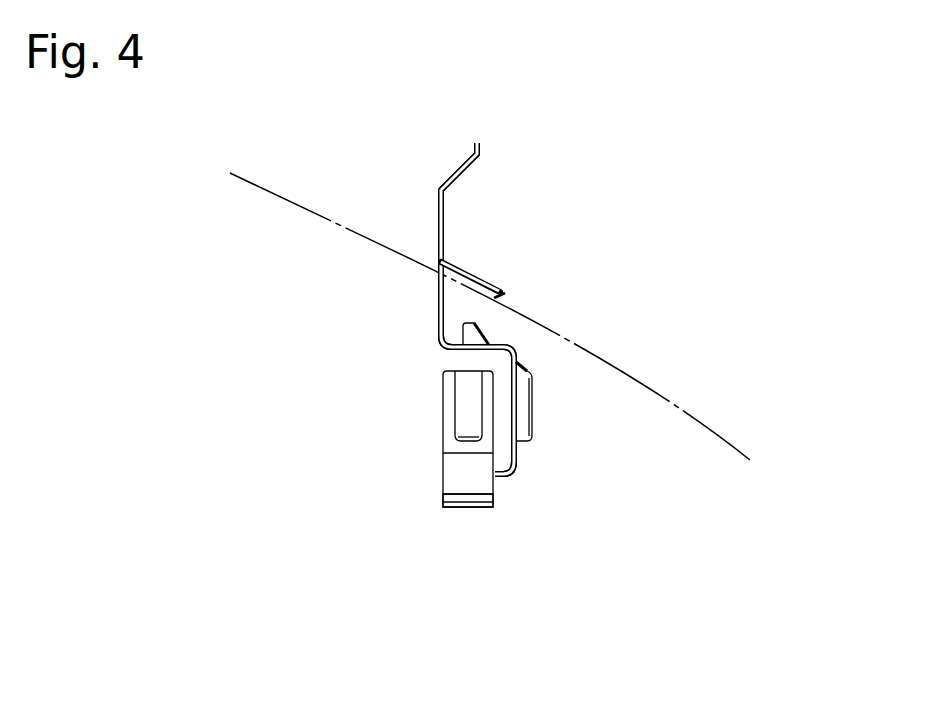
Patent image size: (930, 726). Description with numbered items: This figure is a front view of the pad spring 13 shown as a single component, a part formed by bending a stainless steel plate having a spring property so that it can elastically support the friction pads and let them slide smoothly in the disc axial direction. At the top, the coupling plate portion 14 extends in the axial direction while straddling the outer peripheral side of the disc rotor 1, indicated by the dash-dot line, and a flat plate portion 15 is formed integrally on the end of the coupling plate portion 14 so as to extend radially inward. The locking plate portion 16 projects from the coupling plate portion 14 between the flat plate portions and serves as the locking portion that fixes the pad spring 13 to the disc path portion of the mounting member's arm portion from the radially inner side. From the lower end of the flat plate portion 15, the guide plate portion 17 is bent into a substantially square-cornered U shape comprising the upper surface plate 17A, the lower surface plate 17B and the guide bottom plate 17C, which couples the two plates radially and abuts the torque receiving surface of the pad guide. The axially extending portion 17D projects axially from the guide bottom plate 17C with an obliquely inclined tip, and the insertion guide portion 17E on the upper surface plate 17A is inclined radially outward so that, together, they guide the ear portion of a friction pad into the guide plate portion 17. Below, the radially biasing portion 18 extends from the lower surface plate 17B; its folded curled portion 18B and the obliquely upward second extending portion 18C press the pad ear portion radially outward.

The disc rotor 1 is at (692, 410).
The pad spring 13 is at (423, 217).
The coupling plate portion 14 is at (453, 177).
The flat plate portion 15 is at (435, 287).
The locking plate portion 16 is at (462, 268).
The guide plate portion 17 is at (513, 342).
The upper surface plate 17A is at (440, 350).
The lower surface plate 17B is at (500, 477).
The guide bottom plate 17C is at (518, 452).
The axially extending portion 17D is at (517, 408).
The insertion guide portion 17E is at (472, 335).
The radially biasing portion 18 is at (443, 420).
The curled portion 18B is at (463, 497).
The second extending portion 18C is at (453, 393).